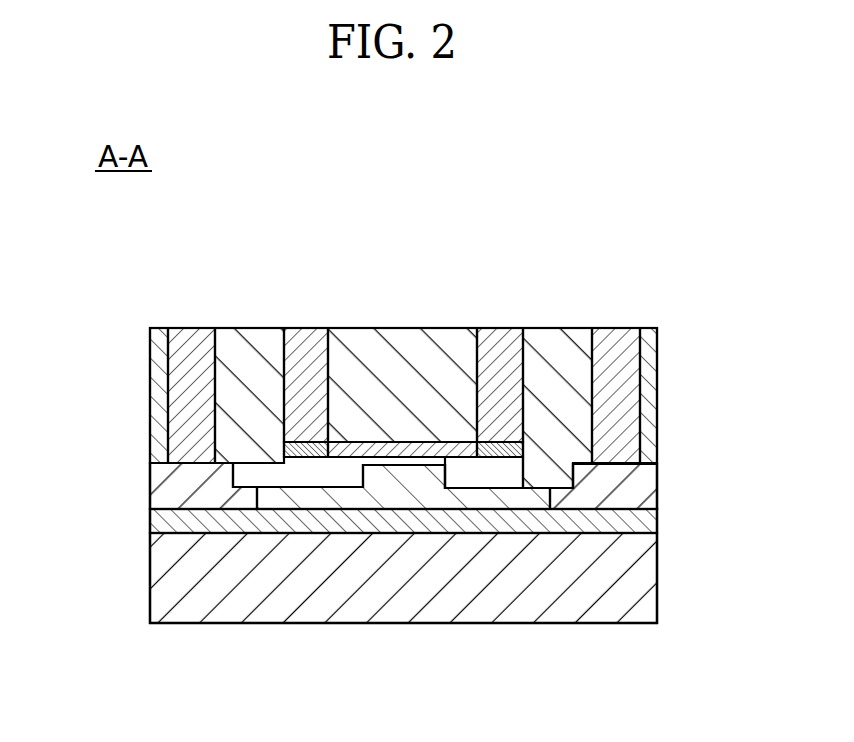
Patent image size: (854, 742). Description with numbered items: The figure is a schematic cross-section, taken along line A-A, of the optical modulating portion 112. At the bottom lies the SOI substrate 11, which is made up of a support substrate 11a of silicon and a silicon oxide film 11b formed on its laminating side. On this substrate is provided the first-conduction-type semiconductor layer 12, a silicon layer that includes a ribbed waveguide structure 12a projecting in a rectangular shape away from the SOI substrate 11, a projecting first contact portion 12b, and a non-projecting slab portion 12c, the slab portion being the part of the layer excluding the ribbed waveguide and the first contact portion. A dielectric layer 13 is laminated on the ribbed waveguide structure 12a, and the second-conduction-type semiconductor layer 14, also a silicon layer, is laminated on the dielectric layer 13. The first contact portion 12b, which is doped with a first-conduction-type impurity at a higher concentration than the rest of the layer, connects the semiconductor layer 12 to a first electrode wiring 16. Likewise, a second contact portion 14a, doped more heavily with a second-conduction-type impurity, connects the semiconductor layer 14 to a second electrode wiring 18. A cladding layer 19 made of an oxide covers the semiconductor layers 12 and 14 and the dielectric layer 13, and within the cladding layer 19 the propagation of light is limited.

The optical modulating portion 112 is at (615, 280).
The SOI substrate 11 is at (662, 508).
The support substrate 11a is at (488, 603).
The silicon oxide film 11b is at (162, 522).
The first-conduction-type semiconductor layer 12 is at (405, 487).
The ribbed waveguide structure 12a is at (455, 477).
The first contact portion 12b is at (637, 485).
The slab portion 12c is at (328, 533).
The dielectric layer 13 is at (362, 466).
The second-conduction-type semiconductor layer 14 is at (342, 455).
The second contact portion 14a is at (293, 447).
The first electrode wiring 16 is at (618, 397).
The second electrode wiring 18 is at (493, 335).
The cladding layer 19 is at (243, 357).